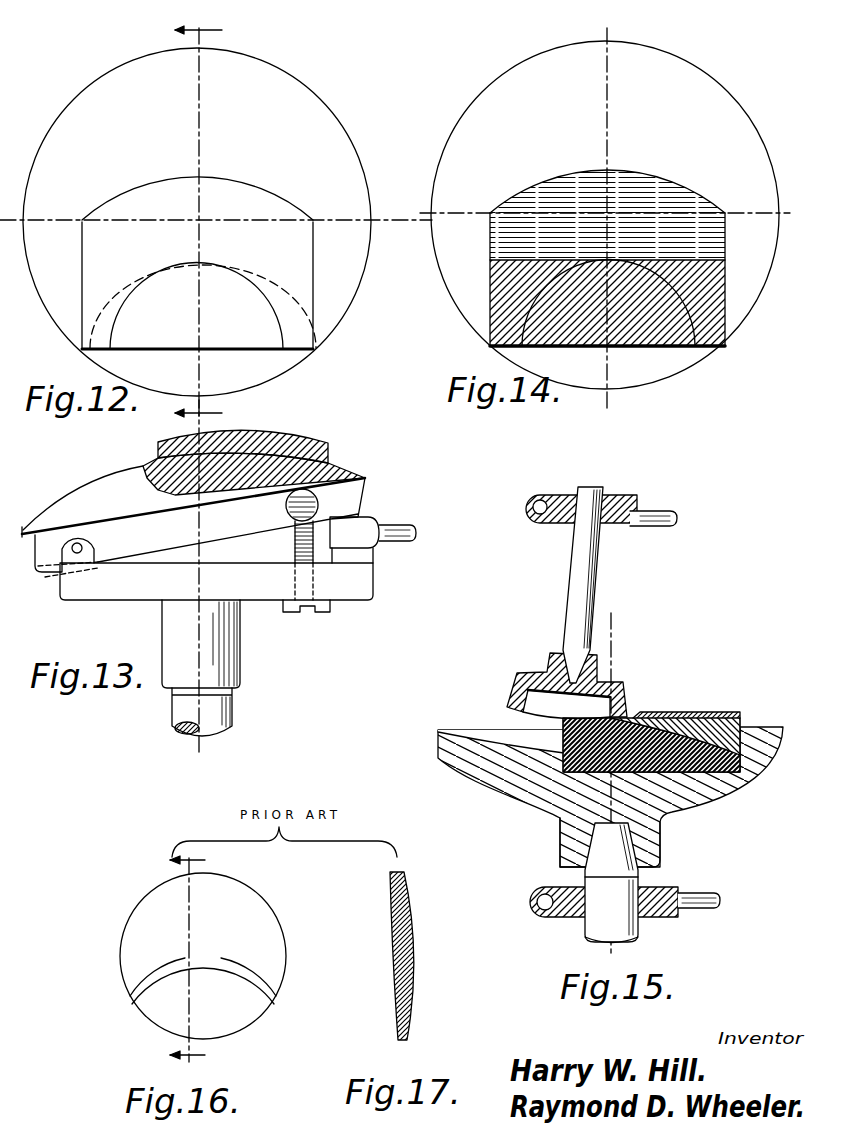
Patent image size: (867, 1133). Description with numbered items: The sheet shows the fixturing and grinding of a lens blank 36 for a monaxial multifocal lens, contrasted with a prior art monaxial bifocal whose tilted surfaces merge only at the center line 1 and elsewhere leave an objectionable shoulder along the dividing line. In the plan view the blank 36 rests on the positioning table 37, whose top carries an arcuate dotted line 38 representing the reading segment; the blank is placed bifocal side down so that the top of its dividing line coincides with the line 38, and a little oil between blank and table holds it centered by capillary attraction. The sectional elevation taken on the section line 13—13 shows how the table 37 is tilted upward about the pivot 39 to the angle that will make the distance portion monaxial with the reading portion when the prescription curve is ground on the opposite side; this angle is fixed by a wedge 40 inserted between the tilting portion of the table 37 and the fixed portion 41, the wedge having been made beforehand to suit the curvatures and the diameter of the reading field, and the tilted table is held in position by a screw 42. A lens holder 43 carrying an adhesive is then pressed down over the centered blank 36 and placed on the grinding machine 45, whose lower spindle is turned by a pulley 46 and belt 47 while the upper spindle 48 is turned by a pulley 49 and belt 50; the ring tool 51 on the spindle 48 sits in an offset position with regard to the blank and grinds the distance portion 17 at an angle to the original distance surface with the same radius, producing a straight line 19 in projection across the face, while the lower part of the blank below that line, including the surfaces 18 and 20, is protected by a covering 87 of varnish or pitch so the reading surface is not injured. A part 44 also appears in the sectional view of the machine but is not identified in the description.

In FIG. 16, the center line 1 is at (202, 955).
In FIG. 12, the section line 13— 13 is at (218, 223).
In FIG. 14, the distance portion 17 is at (683, 203).
In FIG. 16, the distance portion 17 is at (209, 960).
In FIG. 14, the surface 18 is at (710, 305).
In FIG. 14, the straight line 19 is at (695, 258).
In FIG. 14, the surface 20 is at (660, 330).
In FIG. 12, the lens blank 36 is at (303, 243).
In FIG. 14, the lens blank 36 is at (490, 228).
In FIG. 13, the lens blank 36 is at (278, 431).
In FIG. 15, the lens blank 36 is at (740, 728).
In FIG. 12, the positioning table 37 is at (345, 283).
In FIG. 13, the positioning table 37 is at (338, 478).
In FIG. 12, the arcuate line 38 is at (313, 320).
In FIG. 13, the pivot 39 is at (73, 551).
In FIG. 13, the wedge 40 is at (365, 520).
In FIG. 13, the fixed portion 41 is at (358, 580).
In FIG. 13, the screw 42 is at (325, 604).
In FIG. 14, the lens holder 43 is at (707, 95).
In FIG. 15, the lens holder 43 is at (746, 770).
In FIG. 15, the cavity 44 is at (562, 750).
In FIG. 15, the grinding machine 45 is at (620, 895).
In FIG. 15, the pulley 46 is at (655, 915).
In FIG. 15, the belt 47 is at (703, 890).
In FIG. 15, the upper spindle 48 is at (595, 576).
In FIG. 15, the pulley 49 is at (627, 503).
In FIG. 15, the belt 50 is at (676, 508).
In FIG. 15, the ring tool 51 is at (614, 684).
In FIG. 15, the covering 87 is at (680, 712).